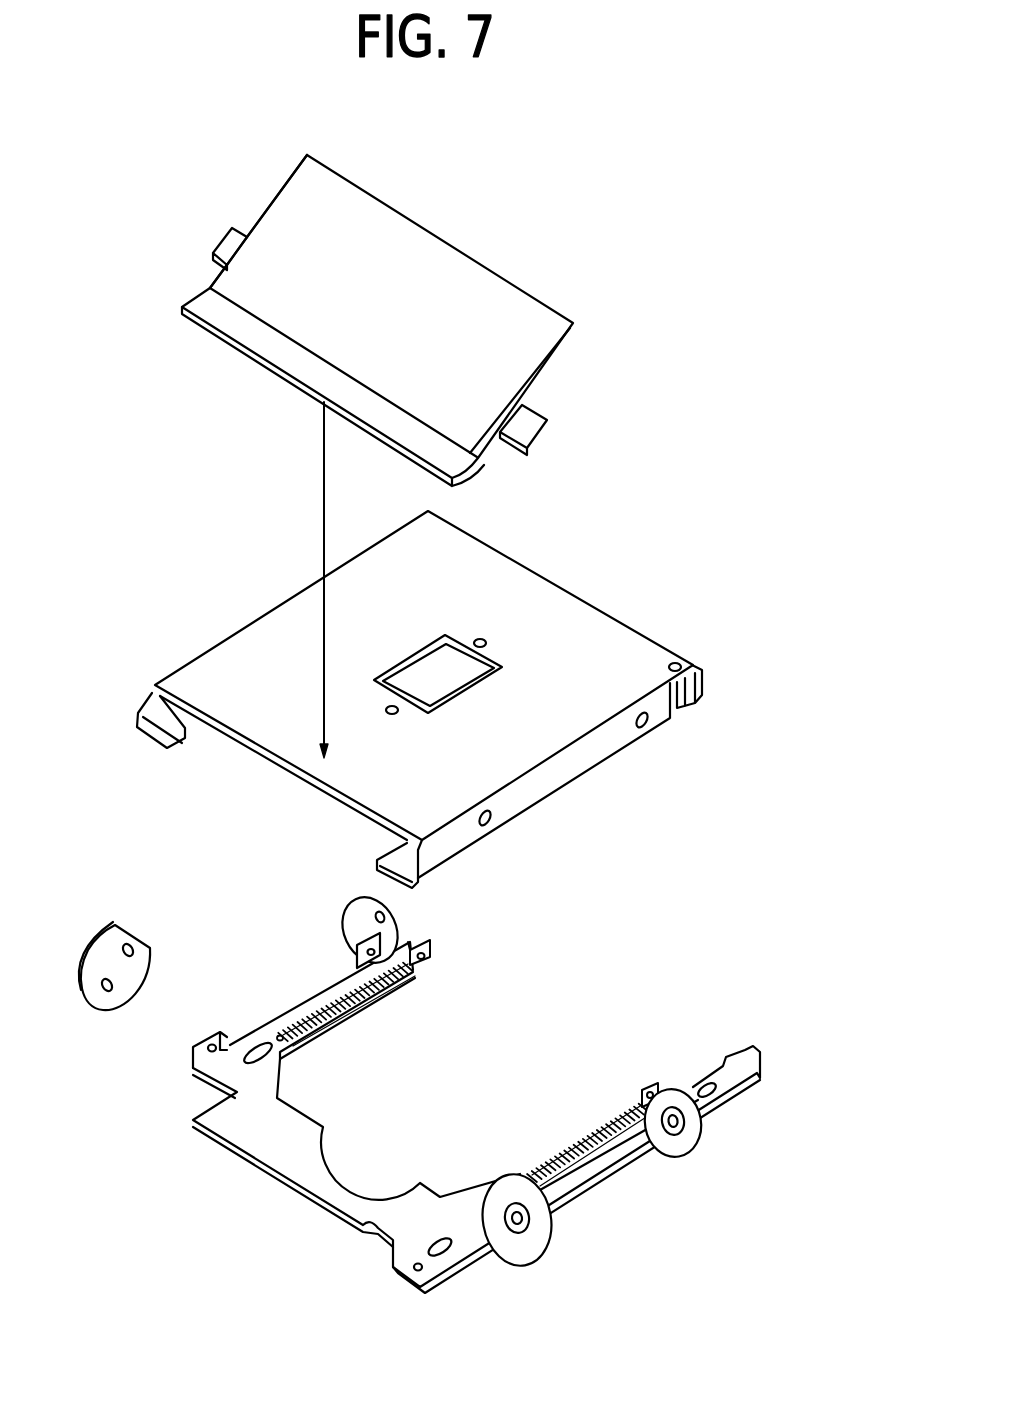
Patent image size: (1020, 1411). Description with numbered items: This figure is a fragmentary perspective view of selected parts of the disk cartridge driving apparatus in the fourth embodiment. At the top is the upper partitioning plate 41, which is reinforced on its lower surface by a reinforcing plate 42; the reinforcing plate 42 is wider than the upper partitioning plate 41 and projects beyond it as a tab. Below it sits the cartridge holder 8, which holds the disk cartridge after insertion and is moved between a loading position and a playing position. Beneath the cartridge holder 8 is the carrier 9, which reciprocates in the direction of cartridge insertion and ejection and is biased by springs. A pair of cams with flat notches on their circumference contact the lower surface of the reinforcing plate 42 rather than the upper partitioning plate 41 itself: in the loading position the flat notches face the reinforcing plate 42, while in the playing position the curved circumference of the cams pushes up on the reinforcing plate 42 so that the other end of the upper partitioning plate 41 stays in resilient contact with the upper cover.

The cartridge holder 8 is at (593, 623).
The carrier 9 is at (308, 1187).
The upper partitioning plate 41 is at (455, 275).
The reinforcing plate 42 is at (537, 427).